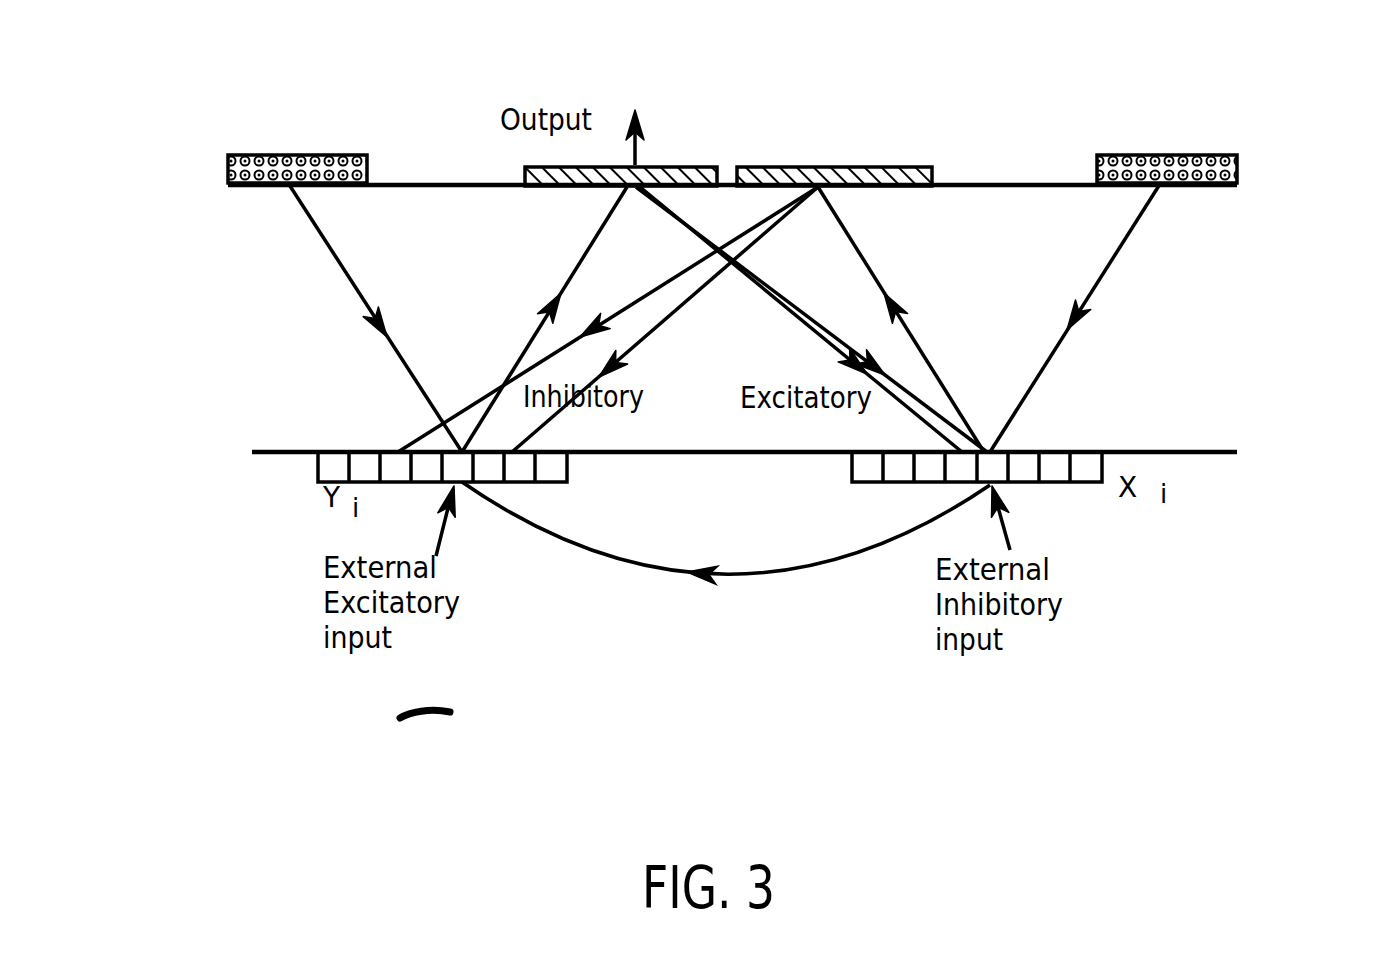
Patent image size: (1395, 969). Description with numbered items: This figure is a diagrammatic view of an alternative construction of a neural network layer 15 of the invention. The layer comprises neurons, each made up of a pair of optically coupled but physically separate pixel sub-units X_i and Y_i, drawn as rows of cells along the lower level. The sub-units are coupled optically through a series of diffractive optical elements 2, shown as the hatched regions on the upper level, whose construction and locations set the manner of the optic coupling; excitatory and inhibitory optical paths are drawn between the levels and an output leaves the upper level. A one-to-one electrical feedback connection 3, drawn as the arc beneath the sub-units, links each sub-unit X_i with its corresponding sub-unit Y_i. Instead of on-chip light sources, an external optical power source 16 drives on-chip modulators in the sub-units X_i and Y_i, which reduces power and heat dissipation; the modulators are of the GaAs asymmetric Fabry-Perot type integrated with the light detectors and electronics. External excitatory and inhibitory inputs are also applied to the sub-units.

The diffractive optical elements 2 is at (673, 167).
The electrical feedback connection 3 is at (780, 575).
The neural network layer 15 is at (450, 712).
The external optical power source 16 is at (218, 165).